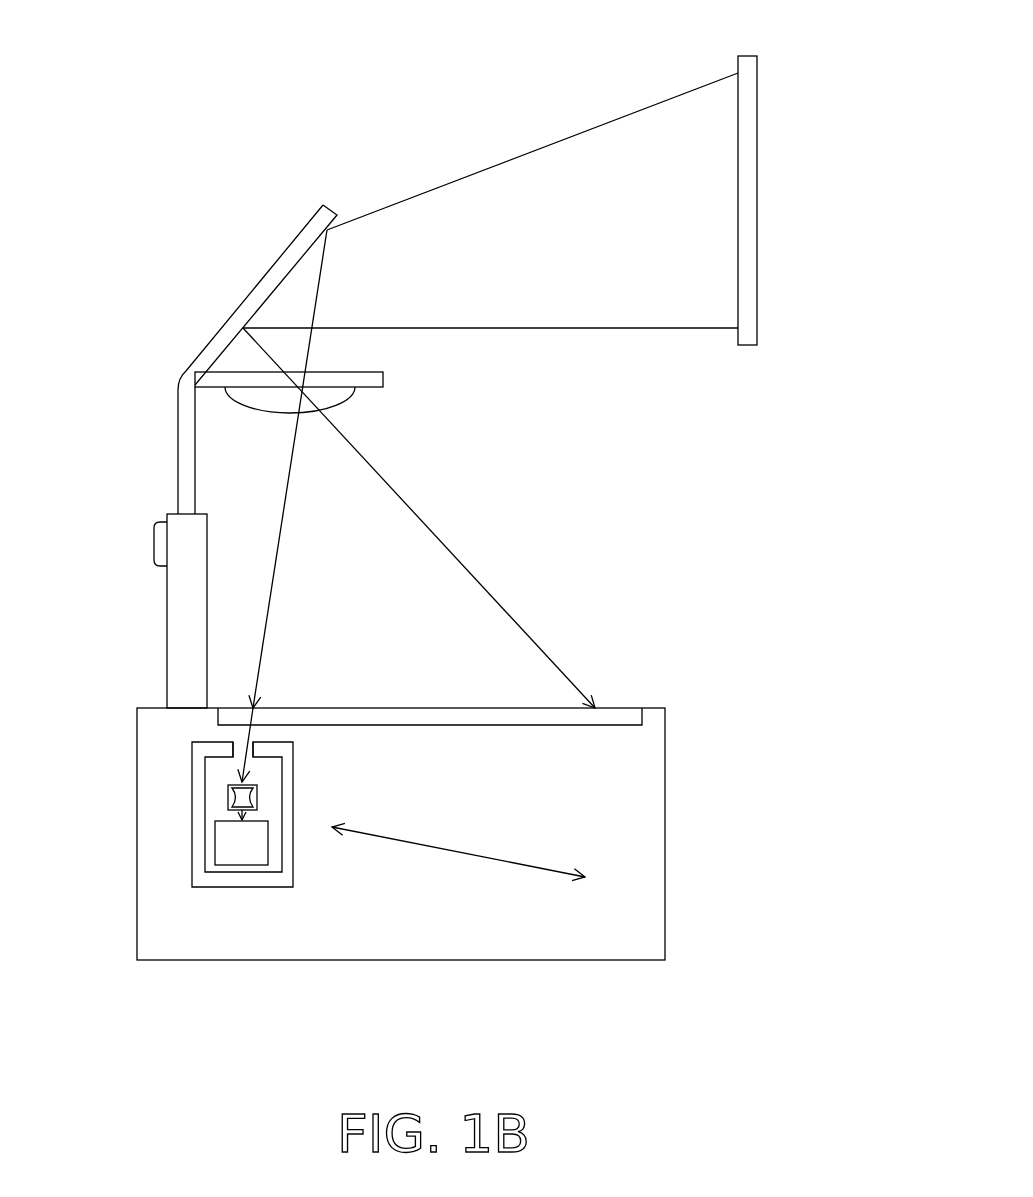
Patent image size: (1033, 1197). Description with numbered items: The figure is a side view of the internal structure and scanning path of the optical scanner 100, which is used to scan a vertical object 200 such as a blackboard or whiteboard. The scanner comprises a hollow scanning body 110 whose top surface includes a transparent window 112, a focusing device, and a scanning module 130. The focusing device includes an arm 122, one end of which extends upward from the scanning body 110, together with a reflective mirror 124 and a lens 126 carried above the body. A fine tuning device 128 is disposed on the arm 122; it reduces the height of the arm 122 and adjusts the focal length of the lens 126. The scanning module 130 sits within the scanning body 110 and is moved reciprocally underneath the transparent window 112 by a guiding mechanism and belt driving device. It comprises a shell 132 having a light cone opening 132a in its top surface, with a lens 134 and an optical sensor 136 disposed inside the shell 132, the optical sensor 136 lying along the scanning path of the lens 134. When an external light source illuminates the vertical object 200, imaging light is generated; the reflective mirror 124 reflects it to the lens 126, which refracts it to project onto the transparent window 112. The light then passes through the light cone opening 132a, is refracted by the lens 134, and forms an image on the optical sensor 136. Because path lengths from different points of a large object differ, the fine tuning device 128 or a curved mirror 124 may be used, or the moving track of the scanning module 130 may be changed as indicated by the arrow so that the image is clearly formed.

The optical scanner 100 is at (737, 1033).
The scanning body 110 is at (665, 792).
The transparent window 112 is at (610, 718).
The arm 122 is at (185, 457).
The reflective mirror 124 is at (270, 280).
The lens 126 is at (333, 393).
The fine tuning device 128 is at (158, 541).
The scanning module 130 is at (168, 866).
The shell 132 is at (198, 878).
The light cone opening 132a is at (236, 741).
The lens 134 is at (227, 795).
The optical sensor 136 is at (242, 855).
The vertical object 200 is at (741, 110).